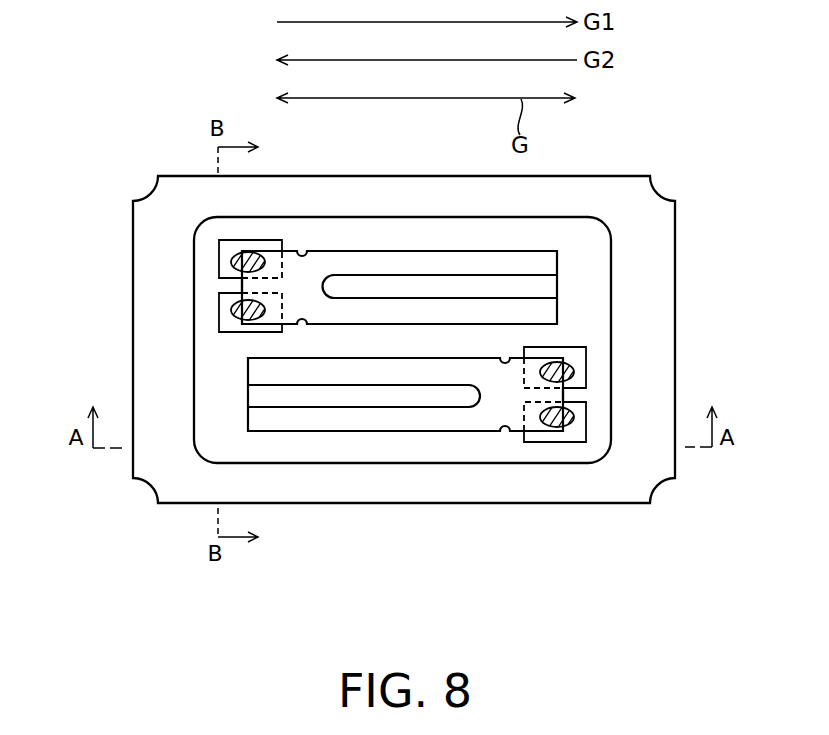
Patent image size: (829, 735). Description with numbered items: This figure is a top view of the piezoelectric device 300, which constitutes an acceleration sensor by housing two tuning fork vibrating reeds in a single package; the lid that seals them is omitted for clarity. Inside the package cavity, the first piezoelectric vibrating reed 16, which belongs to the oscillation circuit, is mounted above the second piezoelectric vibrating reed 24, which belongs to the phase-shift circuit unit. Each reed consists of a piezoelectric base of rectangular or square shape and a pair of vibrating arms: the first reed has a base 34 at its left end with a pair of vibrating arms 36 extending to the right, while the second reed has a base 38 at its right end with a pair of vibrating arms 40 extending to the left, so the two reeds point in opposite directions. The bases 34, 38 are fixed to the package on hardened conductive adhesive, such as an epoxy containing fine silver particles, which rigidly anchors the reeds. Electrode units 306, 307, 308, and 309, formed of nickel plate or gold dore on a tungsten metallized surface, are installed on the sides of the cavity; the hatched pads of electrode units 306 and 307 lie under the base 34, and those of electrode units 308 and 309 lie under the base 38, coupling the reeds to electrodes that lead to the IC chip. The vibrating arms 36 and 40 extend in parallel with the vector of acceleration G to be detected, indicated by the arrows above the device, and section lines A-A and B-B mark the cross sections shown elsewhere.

The piezoelectric device 300 is at (689, 147).
The first piezoelectric vibrating reed 16 is at (455, 230).
The second piezoelectric vibrating reed 24 is at (437, 447).
The base 34 is at (268, 287).
The pair of vibrating arms 36 is at (360, 256).
The base 38 is at (537, 395).
The pair of vibrating arms 40 is at (333, 423).
The electrode unit 306 is at (221, 252).
The electrode unit 307 is at (221, 321).
The electrode unit 308 is at (580, 360).
The electrode unit 309 is at (580, 425).